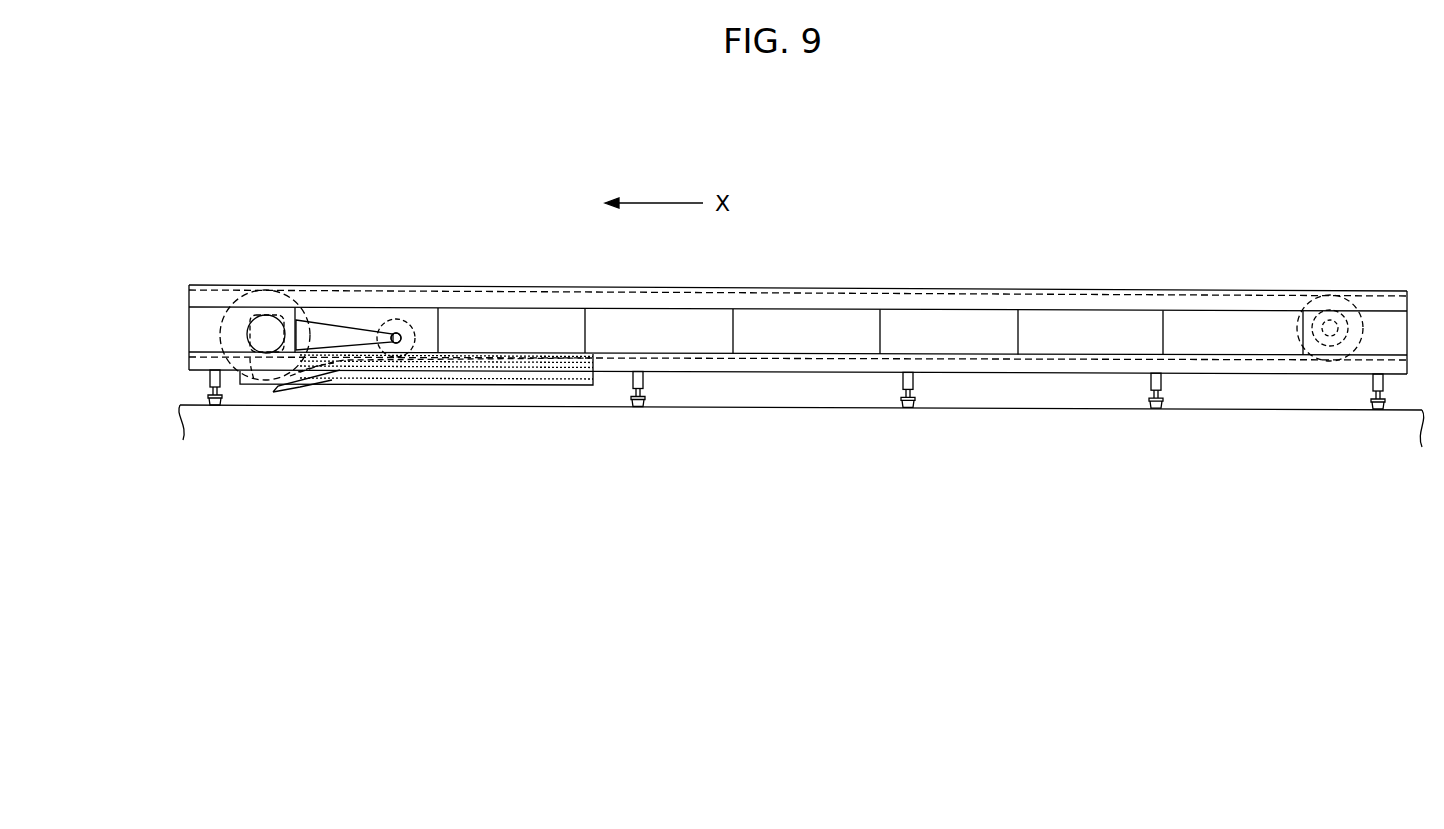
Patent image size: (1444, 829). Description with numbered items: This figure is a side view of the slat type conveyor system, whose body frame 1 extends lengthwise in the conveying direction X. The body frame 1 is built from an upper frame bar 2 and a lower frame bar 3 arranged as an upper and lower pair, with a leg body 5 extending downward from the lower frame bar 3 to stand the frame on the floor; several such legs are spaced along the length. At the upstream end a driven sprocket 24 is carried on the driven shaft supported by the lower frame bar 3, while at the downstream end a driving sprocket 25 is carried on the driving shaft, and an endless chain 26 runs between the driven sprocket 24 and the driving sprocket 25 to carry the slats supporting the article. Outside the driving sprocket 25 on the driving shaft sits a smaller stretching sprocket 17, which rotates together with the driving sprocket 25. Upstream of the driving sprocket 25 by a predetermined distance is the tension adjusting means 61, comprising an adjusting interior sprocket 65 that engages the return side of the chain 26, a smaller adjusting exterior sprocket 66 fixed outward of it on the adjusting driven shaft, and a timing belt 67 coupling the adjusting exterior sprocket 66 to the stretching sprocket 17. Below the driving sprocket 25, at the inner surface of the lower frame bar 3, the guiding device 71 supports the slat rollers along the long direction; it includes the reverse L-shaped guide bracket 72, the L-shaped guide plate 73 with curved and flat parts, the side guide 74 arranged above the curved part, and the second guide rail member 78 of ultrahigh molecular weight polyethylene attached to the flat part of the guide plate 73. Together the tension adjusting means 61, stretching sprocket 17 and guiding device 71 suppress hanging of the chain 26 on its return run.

The body frame 1 is at (184, 304).
The upper frame bar 2 is at (605, 302).
The lower frame bar 3 is at (765, 369).
The leg body 5 is at (645, 386).
The stretching sprocket 17 is at (248, 333).
The driven sprocket 24 is at (1343, 295).
The driving sprocket 25 is at (244, 284).
The chain 26 is at (850, 291).
The tension adjusting means 61 is at (371, 288).
The adjusting interior sprocket 65 is at (392, 318).
The adjusting exterior sprocket 66 is at (402, 336).
The timing belt 67 is at (336, 318).
The guiding device 71 is at (566, 391).
The guide bracket 72 is at (460, 383).
The guide plate 73 is at (283, 388).
The side guide 74 is at (254, 380).
The second guide rail member 78 is at (520, 352).